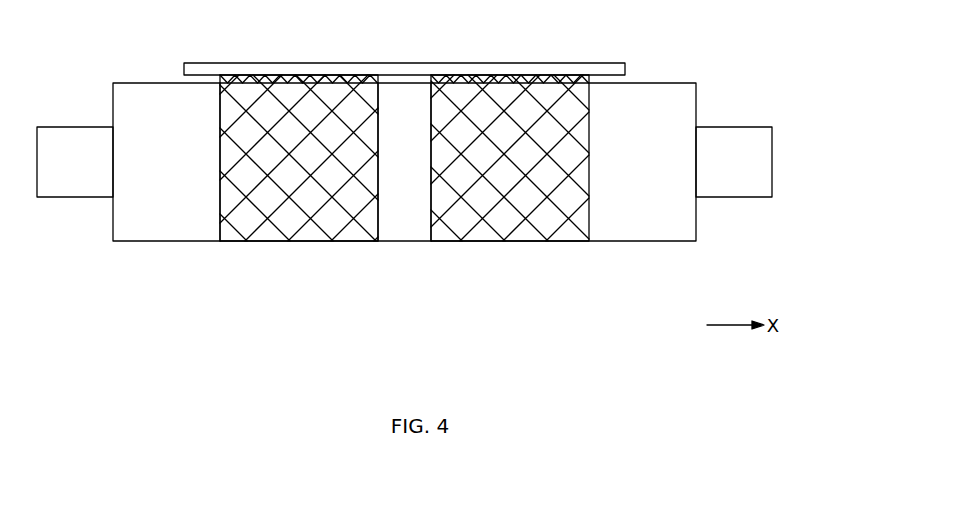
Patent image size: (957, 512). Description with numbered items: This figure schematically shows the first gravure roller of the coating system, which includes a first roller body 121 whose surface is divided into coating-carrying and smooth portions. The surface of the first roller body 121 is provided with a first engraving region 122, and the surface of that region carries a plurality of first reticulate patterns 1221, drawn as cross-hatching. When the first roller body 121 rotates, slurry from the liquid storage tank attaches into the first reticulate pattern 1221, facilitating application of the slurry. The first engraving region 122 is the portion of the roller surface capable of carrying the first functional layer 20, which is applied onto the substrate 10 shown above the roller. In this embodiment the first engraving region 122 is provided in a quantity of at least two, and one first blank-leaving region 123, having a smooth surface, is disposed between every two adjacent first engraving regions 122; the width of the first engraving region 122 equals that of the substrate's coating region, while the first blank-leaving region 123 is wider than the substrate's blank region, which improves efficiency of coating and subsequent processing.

The substrate 10 is at (318, 63).
The first functional layer 20 is at (259, 77).
The first roller body 121 is at (404, 202).
The first engraving region 122 is at (293, 220).
The first blank-leaving region 123 is at (404, 187).
The first reticulate pattern 1221 is at (246, 218).